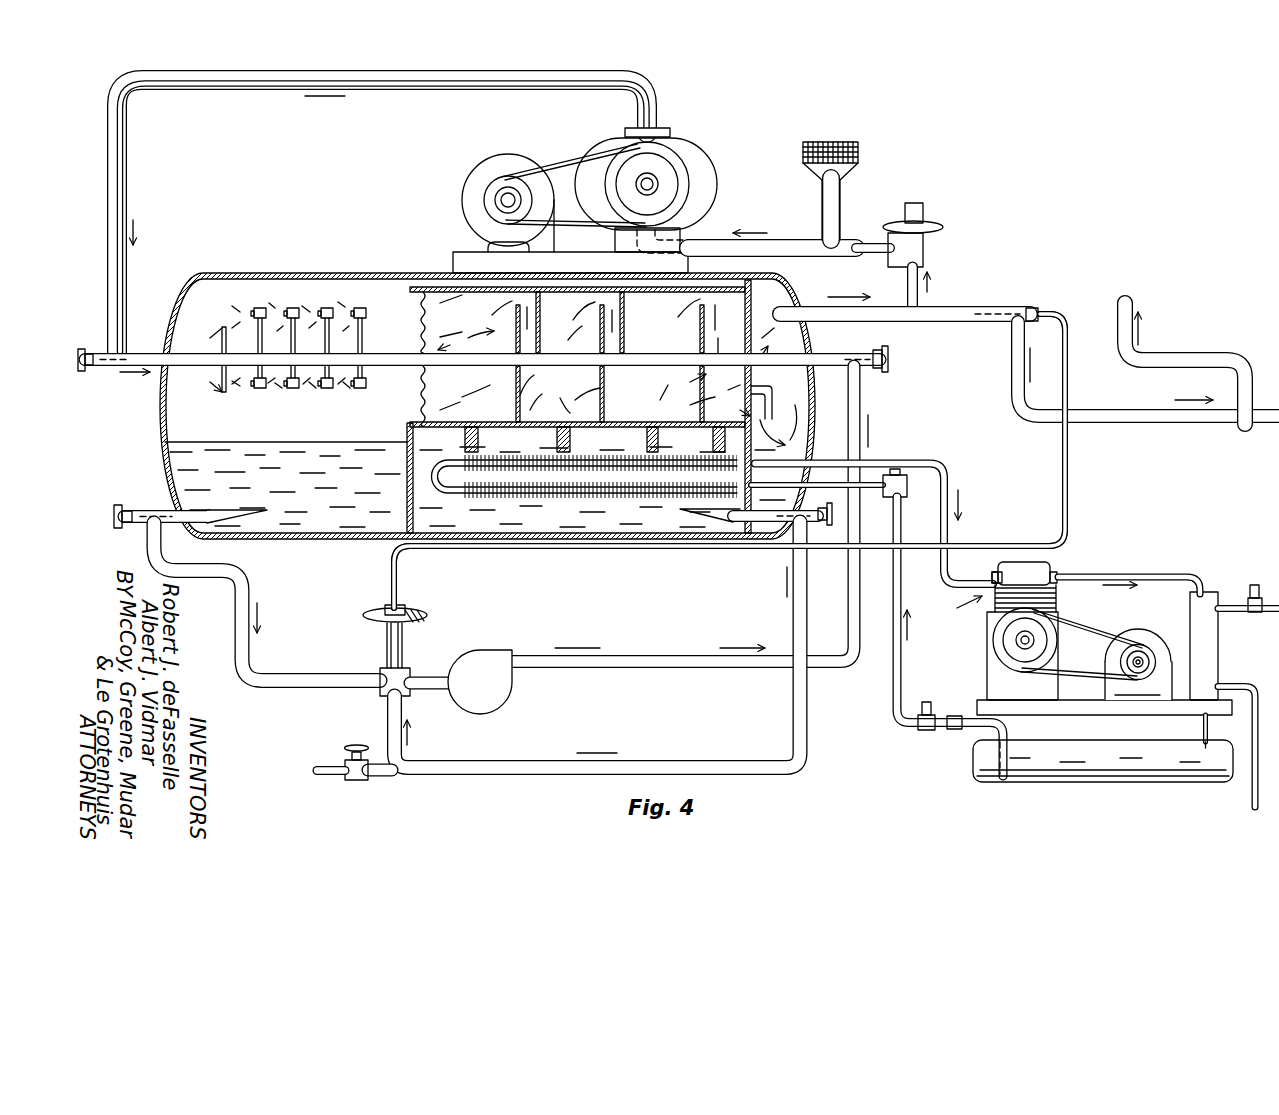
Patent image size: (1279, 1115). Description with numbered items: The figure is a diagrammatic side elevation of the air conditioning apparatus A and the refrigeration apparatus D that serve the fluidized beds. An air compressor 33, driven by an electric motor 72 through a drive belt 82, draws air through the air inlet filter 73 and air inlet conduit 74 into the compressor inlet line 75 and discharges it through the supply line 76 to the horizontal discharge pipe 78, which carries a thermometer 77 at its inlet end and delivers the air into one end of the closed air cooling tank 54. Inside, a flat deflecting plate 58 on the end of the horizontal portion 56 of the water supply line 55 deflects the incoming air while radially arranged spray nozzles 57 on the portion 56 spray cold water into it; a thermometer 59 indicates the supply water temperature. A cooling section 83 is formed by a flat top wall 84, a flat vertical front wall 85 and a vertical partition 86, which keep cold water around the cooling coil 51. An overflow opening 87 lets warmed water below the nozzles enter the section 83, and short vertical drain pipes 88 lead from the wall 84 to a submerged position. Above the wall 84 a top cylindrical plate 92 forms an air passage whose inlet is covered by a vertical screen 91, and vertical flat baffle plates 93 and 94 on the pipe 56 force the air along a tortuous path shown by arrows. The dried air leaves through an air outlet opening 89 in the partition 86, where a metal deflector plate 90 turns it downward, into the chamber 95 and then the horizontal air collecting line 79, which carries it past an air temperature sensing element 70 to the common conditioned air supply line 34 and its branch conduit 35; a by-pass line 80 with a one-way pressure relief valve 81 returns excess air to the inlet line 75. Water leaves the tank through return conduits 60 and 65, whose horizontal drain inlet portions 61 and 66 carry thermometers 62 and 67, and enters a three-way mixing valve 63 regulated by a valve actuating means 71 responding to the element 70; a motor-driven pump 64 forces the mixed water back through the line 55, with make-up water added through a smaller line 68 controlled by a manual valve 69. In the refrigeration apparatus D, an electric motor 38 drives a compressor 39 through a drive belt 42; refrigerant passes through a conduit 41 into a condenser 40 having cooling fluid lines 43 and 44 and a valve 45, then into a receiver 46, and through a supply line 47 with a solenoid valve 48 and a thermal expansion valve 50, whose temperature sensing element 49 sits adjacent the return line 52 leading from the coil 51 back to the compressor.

The air compressor 33 is at (683, 152).
The common conditioned air supply line 34 is at (1232, 428).
The branch conduit 35 is at (1208, 352).
The electric motor 38 is at (1150, 637).
The compressor 39 is at (1085, 638).
The condenser 40 is at (1222, 658).
The conduit 41 is at (1090, 573).
The drive belt 42 is at (1097, 634).
The cooling fluid line 43 is at (1250, 795).
The cooling fluid line 44 is at (1272, 600).
The valve 45 is at (1243, 590).
The receiver 46 is at (1072, 784).
The supply line 47 is at (893, 692).
The solenoid valve 48 is at (920, 730).
The temperature sensing element 49 is at (925, 550).
The thermal expansion valve 50 is at (903, 478).
The cooling coil 51 is at (600, 490).
The return line 52 is at (950, 470).
The air cooling tank 54 is at (212, 276).
The water supply line 55 is at (862, 390).
The horizontal portion 56 is at (475, 350).
The spray nozzles 57 is at (360, 308).
The deflecting plate 58 is at (222, 335).
The thermometer 59 is at (890, 358).
The return conduit 60 is at (250, 655).
The horizontal drain inlet portion 61 is at (187, 522).
The thermometer 62 is at (122, 506).
The three-way mixing valve 63 is at (405, 664).
The motor-driven pump 64 is at (500, 697).
The return conduit 65 is at (388, 722).
The horizontal drain inlet portion 66 is at (733, 540).
The thermometer 67 is at (827, 528).
The make-up water line 68 is at (320, 765).
The manual valve 69 is at (350, 782).
The air temperature sensing element 70 is at (998, 310).
The valve actuating means 71 is at (415, 612).
The electric motor 72 is at (463, 172).
The air inlet filter 73 is at (862, 152).
The air inlet conduit 74 is at (822, 208).
The compressor inlet line 75 is at (722, 238).
The supply line 76 is at (218, 90).
The thermometer 77 is at (85, 372).
The horizontal discharge pipe 78 is at (153, 352).
The horizontal air collecting line 79 is at (955, 324).
The by-pass line 80 is at (906, 278).
The one-way pressure relief valve 81 is at (940, 222).
The drive belt 82 is at (562, 162).
The cooling section 83 is at (406, 492).
The flat top wall 84 is at (630, 385).
The flat vertical front wall 85 is at (392, 546).
The vertical partition 86 is at (780, 298).
The overflow opening 87 is at (407, 432).
The short vertical drain pipes 88 is at (463, 432).
The air outlet opening 89 is at (750, 400).
The metal deflector plate 90 is at (776, 431).
The vertical screen 91 is at (470, 340).
The top cylindrical plate 92 is at (481, 324).
The vertical flat baffle plates 93 is at (606, 369).
The vertical flat baffle plates 94 is at (630, 348).
The chamber 95 is at (788, 343).